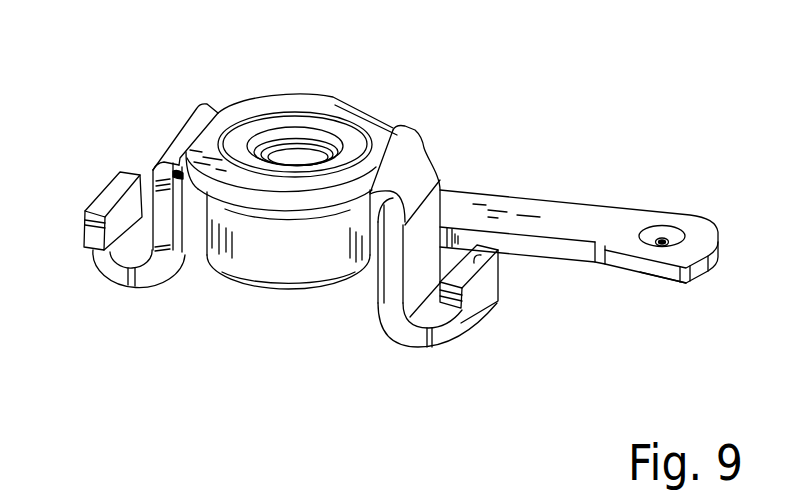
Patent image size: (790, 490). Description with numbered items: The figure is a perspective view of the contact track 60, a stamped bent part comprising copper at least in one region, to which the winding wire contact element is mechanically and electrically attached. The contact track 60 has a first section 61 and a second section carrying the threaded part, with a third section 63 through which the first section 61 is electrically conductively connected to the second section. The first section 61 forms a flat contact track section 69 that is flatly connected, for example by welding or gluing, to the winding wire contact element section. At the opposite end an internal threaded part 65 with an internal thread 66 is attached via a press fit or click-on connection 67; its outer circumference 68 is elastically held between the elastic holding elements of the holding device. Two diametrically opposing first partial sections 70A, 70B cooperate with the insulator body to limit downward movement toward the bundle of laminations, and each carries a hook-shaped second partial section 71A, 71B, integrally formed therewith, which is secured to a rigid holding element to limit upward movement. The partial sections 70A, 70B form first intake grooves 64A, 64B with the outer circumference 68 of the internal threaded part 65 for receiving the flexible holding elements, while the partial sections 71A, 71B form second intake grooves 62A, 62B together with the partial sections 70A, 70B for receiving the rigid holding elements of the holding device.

The contact track 60 is at (424, 64).
The first section 61 is at (712, 232).
The second intake groove 62A is at (426, 302).
The second intake groove 62B is at (131, 240).
The third section 63 is at (568, 222).
The first intake groove 64A is at (380, 258).
The first intake groove 64B is at (199, 253).
The internal threaded part 65 is at (247, 128).
The internal thread 66 is at (292, 133).
The press fit or click-on connection 67 is at (351, 131).
The outer circumference 68 is at (277, 248).
The flat contact track section 69 is at (653, 281).
The first partial section 70A is at (413, 170).
The first partial section 70B is at (192, 128).
The second partial section 71A is at (493, 302).
The second partial section 71B is at (118, 187).